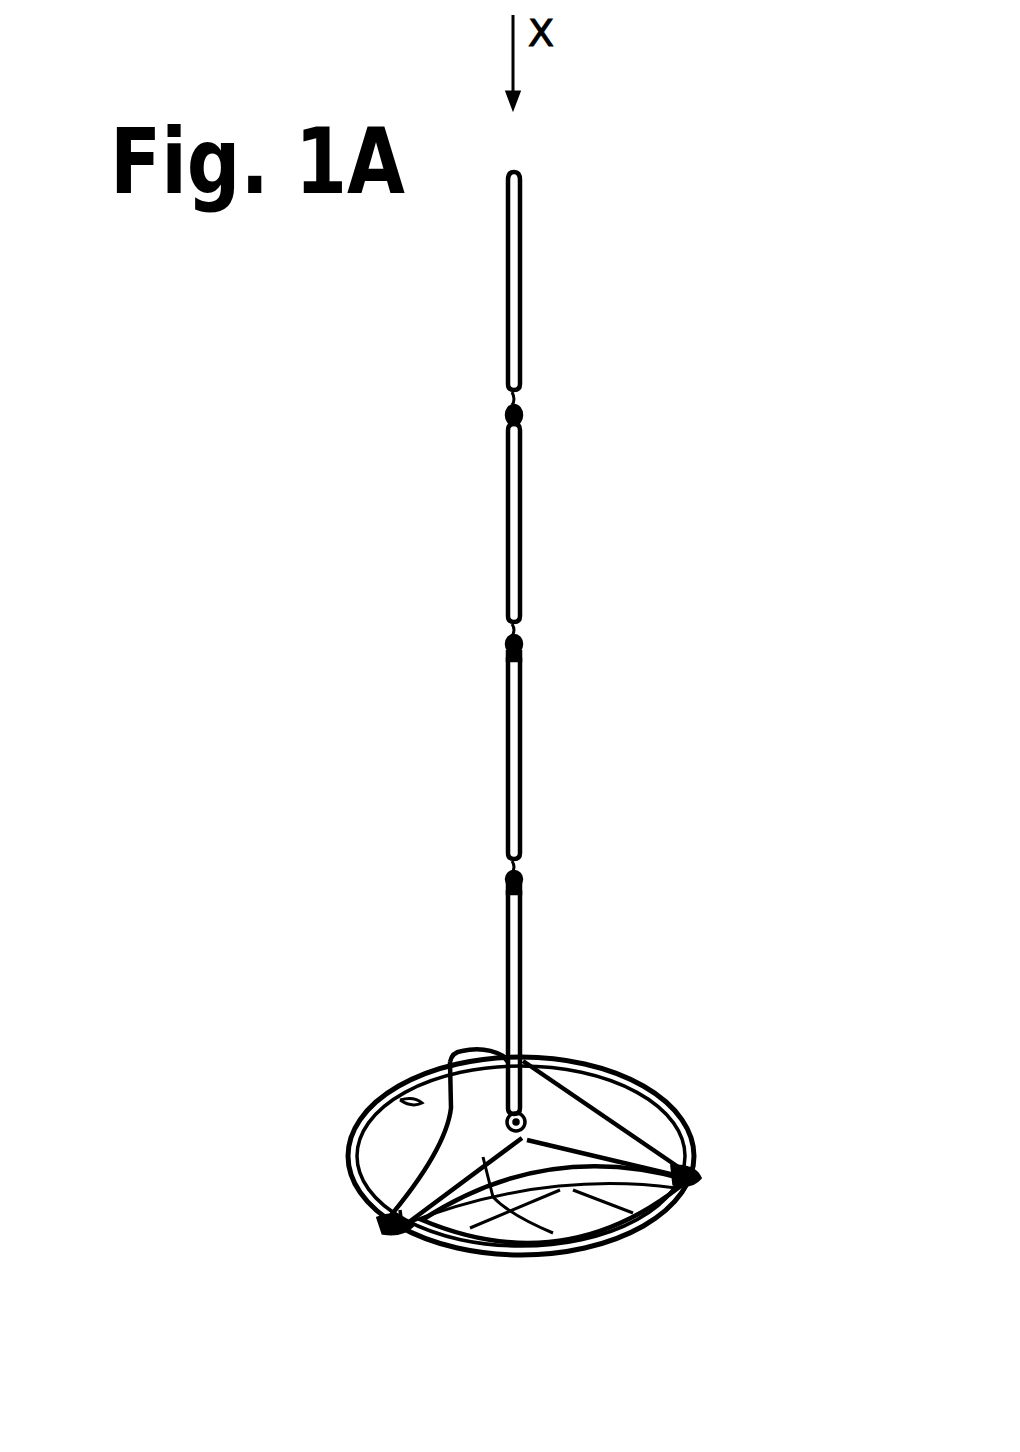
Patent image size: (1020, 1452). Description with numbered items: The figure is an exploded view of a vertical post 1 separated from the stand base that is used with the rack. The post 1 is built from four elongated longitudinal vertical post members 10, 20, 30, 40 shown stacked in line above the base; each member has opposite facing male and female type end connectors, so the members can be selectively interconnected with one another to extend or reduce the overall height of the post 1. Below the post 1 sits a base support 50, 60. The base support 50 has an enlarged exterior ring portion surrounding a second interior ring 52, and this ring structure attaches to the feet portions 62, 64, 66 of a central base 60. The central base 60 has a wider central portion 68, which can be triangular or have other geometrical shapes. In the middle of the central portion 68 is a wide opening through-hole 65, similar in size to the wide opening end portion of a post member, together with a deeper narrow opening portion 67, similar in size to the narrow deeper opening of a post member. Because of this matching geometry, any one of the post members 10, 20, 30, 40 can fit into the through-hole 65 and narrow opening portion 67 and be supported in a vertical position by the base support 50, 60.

The post 1 is at (426, 572).
The vertical post member 10 is at (515, 1000).
The vertical post member 20 is at (512, 760).
The vertical post member 30 is at (512, 527).
The vertical post member 40 is at (512, 297).
The base support 50 is at (668, 1105).
The second interior ring 52 is at (400, 1100).
The central base 60 is at (570, 1252).
The feet portion 62 is at (697, 1180).
The feet portion 64 is at (470, 1046).
The wide opening through-hole 65 is at (640, 1218).
The feet portion 66 is at (395, 1236).
The deeper narrow opening portion 67 is at (528, 1116).
The wider central portion 68 is at (468, 1150).